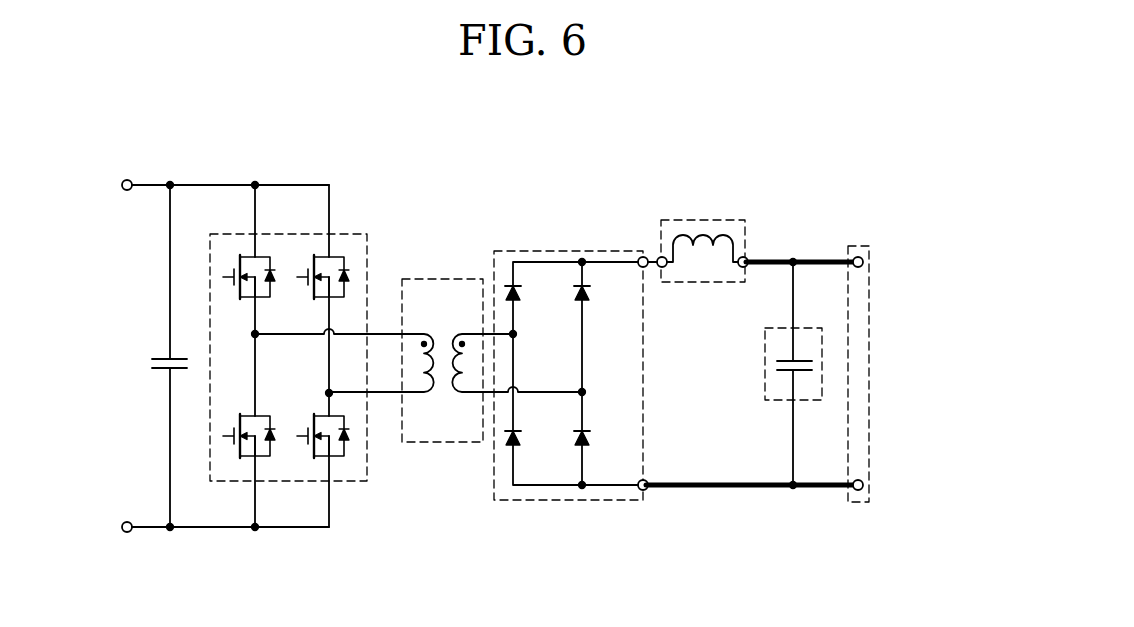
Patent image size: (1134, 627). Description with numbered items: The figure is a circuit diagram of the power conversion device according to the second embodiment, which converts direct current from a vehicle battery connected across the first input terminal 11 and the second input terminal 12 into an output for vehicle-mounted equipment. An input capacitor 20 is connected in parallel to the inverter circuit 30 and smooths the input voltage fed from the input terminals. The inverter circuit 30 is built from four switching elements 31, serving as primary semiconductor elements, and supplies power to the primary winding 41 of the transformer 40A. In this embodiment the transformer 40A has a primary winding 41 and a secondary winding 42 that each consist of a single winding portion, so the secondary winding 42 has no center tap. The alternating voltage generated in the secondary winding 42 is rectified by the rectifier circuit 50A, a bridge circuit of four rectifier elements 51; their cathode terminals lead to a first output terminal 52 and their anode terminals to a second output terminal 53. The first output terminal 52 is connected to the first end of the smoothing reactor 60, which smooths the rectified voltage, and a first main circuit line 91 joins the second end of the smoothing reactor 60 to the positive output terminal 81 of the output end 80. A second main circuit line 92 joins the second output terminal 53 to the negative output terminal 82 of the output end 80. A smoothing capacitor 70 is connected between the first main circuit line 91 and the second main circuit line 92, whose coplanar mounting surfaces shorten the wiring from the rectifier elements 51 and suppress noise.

The first input terminal 11 is at (127, 180).
The second input terminal 12 is at (126, 533).
The input capacitor 20 is at (163, 356).
The inverter circuit 30 is at (307, 356).
The switching element 31 is at (260, 255).
The transformer 40A is at (418, 344).
The primary winding 41 is at (436, 395).
The secondary winding 42 is at (452, 395).
The rectifier circuit 50A is at (578, 378).
The rectifier element 51 is at (519, 293).
The first output terminal 52 is at (643, 257).
The second output terminal 53 is at (646, 490).
The smoothing reactor 60 is at (722, 220).
The smoothing capacitor 70 is at (765, 378).
The output end 80 is at (896, 370).
The output terminal 81 is at (859, 257).
The output terminal 82 is at (861, 490).
The first main circuit line 91 is at (820, 259).
The second main circuit line 92 is at (820, 488).